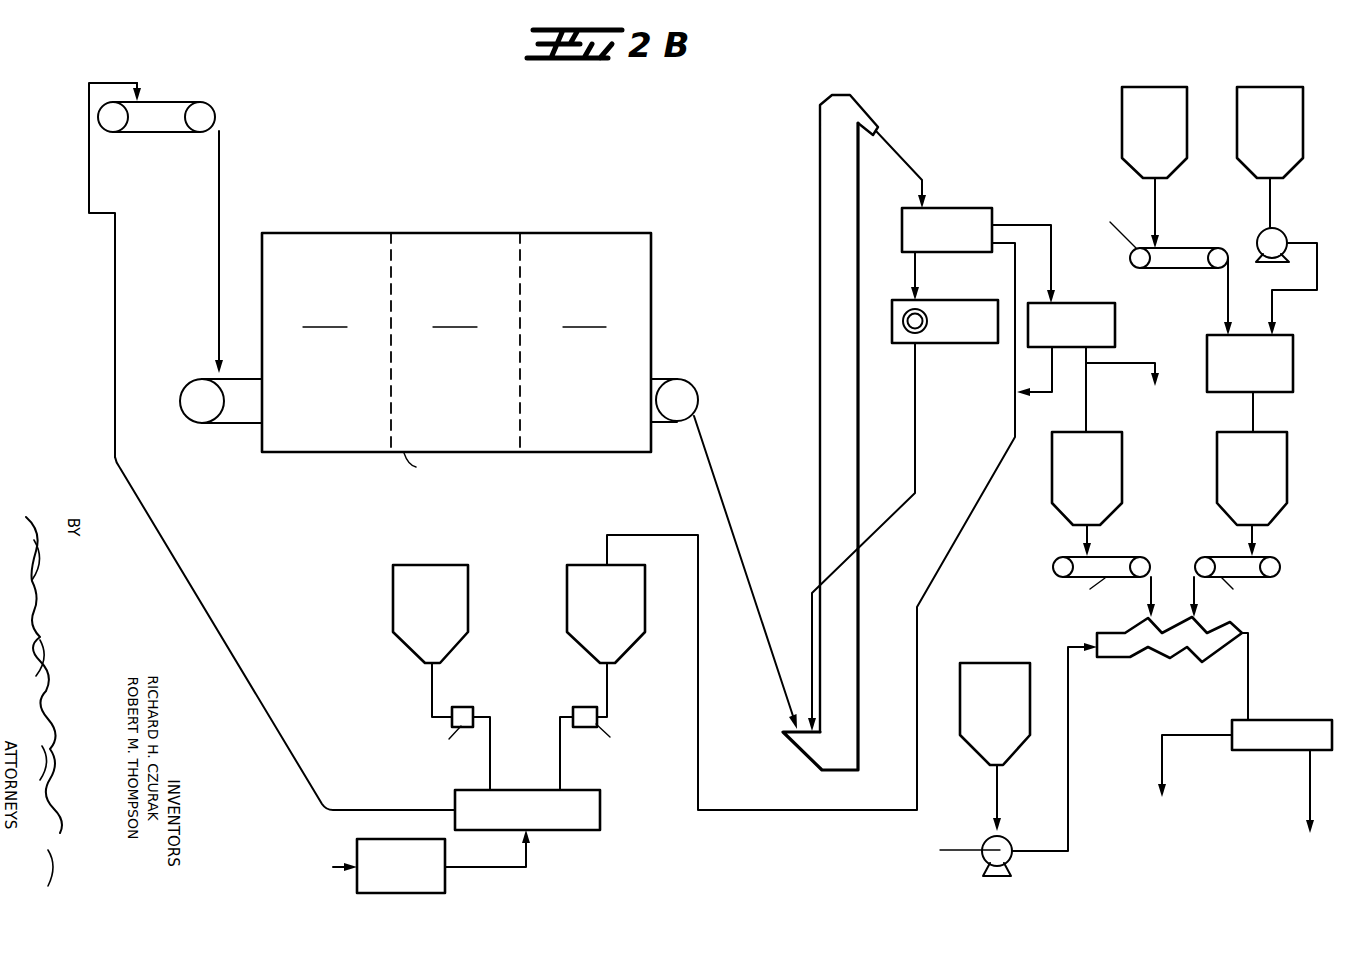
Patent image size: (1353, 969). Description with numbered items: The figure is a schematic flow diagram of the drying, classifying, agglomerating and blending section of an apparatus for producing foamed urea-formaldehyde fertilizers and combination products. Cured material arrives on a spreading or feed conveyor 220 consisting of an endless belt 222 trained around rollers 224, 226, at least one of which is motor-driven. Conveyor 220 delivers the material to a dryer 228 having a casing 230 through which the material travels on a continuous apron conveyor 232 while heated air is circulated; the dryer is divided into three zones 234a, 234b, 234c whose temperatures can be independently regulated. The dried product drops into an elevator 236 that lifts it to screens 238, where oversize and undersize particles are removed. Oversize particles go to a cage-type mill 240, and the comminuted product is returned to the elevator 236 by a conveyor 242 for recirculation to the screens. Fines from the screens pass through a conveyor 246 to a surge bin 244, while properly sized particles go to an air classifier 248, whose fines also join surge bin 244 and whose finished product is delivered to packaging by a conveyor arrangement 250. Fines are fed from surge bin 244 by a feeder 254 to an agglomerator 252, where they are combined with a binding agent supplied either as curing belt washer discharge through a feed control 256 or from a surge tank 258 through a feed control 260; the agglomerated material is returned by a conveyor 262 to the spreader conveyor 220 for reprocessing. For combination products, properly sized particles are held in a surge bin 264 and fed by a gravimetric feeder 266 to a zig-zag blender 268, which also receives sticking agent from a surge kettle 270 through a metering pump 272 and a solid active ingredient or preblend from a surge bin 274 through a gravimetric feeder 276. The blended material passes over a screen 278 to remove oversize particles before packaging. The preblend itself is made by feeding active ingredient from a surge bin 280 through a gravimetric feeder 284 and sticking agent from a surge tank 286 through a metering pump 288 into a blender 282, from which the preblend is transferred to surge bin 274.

The spreading or feed conveyor 220 is at (140, 259).
The endless belt 222 is at (160, 70).
The roller 224 is at (110, 112).
The roller 226 is at (219, 126).
The dryer 228 is at (456, 335).
The casing 230 is at (653, 254).
The continuous apron conveyor 232 is at (205, 424).
The dryer zone 234a is at (325, 318).
The dryer zone 234b is at (455, 318).
The dryer zone 234c is at (584, 318).
The elevator 236 is at (820, 360).
The screens 238 is at (957, 208).
The mill 240 is at (979, 290).
The conveyor 242 is at (917, 426).
The surge bin 244 is at (584, 565).
The conveyor 246 is at (693, 532).
The air classifier 248 is at (1085, 303).
The conveyor arrangement 250 is at (1157, 359).
The agglomerator 252 is at (601, 803).
The feeder 254 is at (578, 707).
The feed control 256 is at (405, 839).
The surge tank 258 is at (406, 565).
The feed control 260 is at (470, 707).
The conveyor 262 is at (167, 533).
The surge bin 264 is at (1123, 470).
The gravimetric feeder 266 is at (1064, 557).
The blender 268 is at (1118, 660).
The surge kettle 270 is at (991, 662).
The metering pump 272 is at (1012, 872).
The surge bin 274 is at (1216, 486).
The gravimetric feeder 276 is at (1273, 557).
The screen 278 is at (1332, 720).
The surge bin 280 is at (1153, 87).
The blender 282 is at (1295, 356).
The gravimetric feeder 284 is at (1181, 247).
The surge tank 286 is at (1272, 87).
The metering pump 288 is at (1285, 238).